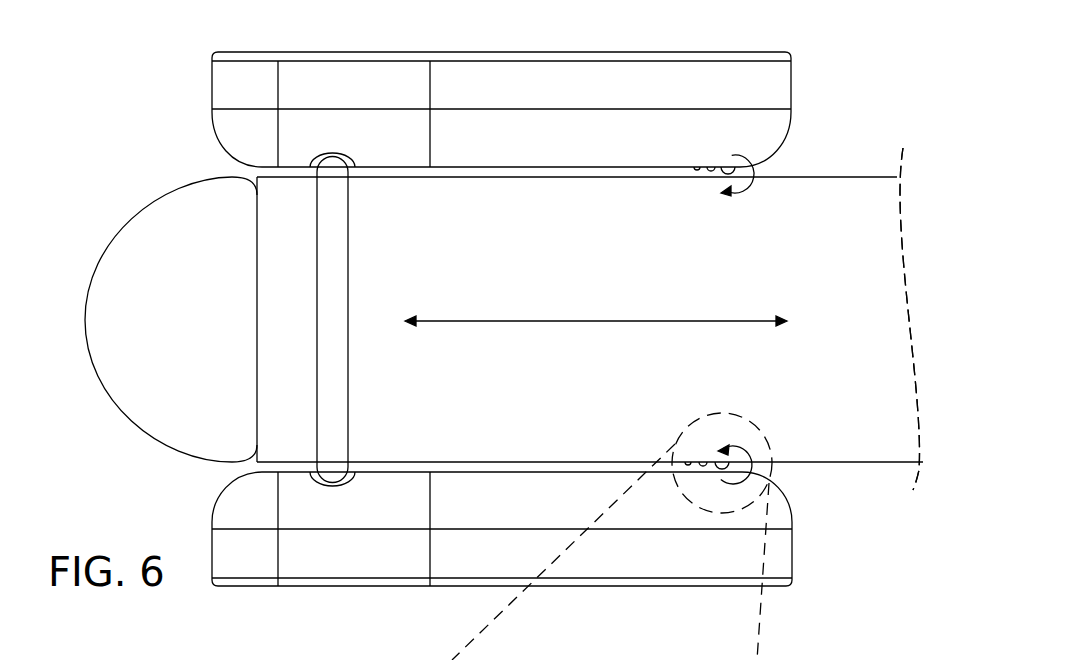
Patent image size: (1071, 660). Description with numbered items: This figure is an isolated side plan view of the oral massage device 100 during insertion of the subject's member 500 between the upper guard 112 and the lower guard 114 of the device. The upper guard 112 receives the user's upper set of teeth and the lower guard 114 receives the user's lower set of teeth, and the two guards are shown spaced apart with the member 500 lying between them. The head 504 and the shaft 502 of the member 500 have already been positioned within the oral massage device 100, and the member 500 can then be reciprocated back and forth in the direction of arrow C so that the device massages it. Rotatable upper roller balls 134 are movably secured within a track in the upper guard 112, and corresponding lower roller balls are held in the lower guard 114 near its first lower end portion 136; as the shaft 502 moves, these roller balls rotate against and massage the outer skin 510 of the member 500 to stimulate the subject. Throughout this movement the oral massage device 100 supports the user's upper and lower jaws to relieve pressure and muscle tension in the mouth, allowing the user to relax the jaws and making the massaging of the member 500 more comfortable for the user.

The oral massage device 100 is at (141, 47).
The upper guard 112 is at (688, 52).
The lower guard 114 is at (783, 588).
The upper roller balls 134 is at (710, 178).
The first lower end portion 136 is at (721, 470).
The member 500 is at (855, 372).
The shaft 502 is at (865, 190).
The head 504 is at (115, 247).
The outer skin 510 is at (808, 183).